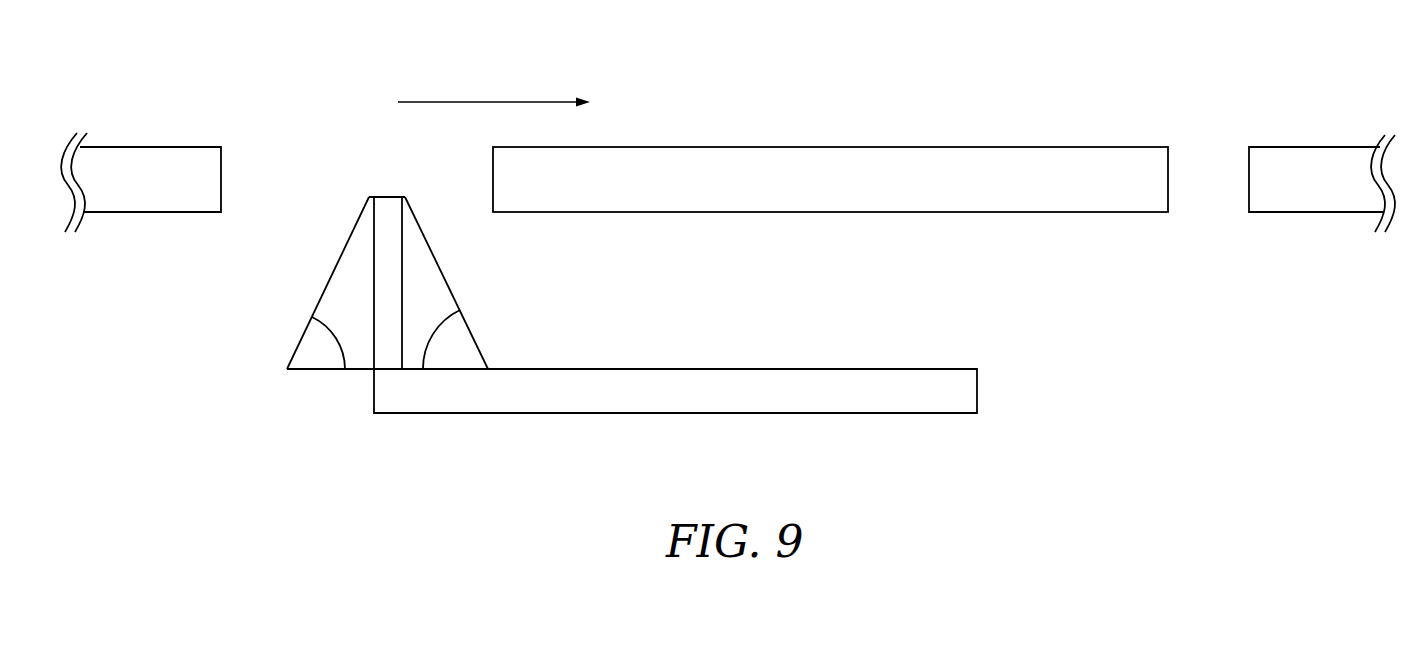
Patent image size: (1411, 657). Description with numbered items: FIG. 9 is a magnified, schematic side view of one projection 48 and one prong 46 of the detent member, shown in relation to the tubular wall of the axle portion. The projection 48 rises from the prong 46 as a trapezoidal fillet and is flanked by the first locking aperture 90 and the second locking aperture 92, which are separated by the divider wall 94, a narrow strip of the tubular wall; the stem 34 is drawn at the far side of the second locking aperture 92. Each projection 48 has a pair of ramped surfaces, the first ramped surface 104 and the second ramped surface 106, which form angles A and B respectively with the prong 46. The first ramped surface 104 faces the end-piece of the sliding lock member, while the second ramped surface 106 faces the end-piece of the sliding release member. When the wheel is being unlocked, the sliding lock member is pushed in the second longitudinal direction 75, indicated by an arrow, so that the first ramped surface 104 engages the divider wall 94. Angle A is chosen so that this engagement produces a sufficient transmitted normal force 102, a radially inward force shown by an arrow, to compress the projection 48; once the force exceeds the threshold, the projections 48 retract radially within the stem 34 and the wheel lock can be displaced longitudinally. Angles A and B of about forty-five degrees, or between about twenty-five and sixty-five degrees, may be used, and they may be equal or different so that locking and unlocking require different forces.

The stem 34 is at (1315, 157).
The prong 46 is at (790, 382).
The projection 48 is at (411, 254).
The second longitudinal direction 75 is at (495, 100).
The first locking aperture 90 is at (411, 221).
The second locking aperture 92 is at (1203, 155).
The divider wall 94 is at (789, 157).
The transmitted normal force 102 is at (458, 295).
The first ramped surface 104 is at (476, 314).
The second ramped surface 106 is at (342, 224).